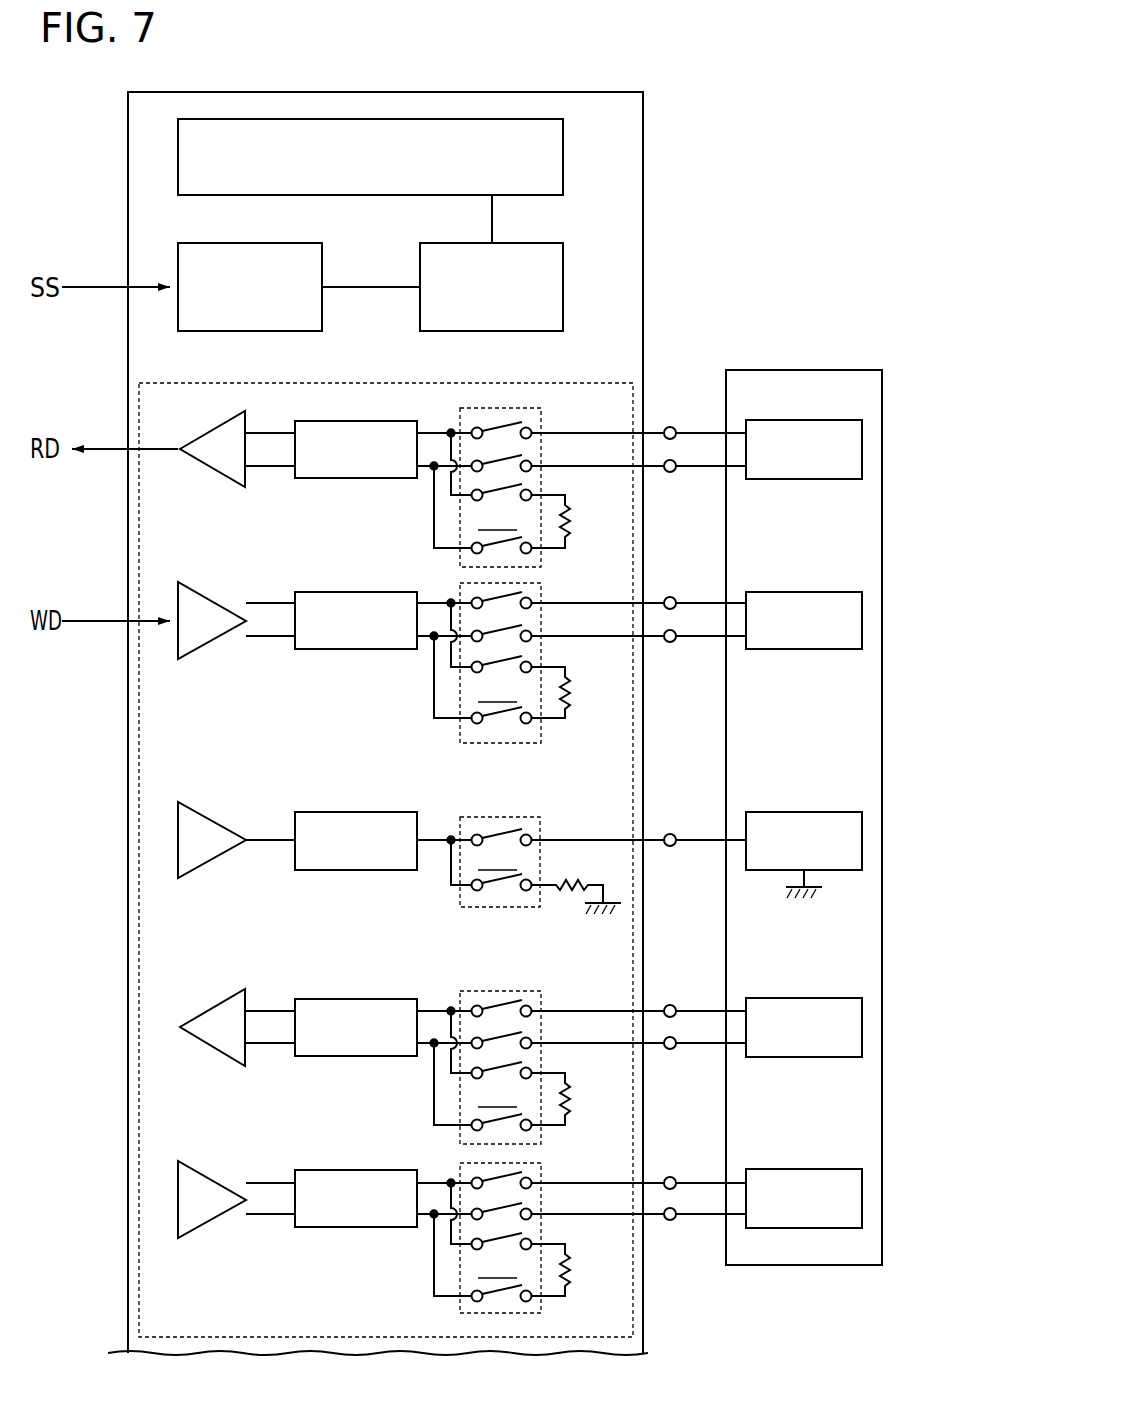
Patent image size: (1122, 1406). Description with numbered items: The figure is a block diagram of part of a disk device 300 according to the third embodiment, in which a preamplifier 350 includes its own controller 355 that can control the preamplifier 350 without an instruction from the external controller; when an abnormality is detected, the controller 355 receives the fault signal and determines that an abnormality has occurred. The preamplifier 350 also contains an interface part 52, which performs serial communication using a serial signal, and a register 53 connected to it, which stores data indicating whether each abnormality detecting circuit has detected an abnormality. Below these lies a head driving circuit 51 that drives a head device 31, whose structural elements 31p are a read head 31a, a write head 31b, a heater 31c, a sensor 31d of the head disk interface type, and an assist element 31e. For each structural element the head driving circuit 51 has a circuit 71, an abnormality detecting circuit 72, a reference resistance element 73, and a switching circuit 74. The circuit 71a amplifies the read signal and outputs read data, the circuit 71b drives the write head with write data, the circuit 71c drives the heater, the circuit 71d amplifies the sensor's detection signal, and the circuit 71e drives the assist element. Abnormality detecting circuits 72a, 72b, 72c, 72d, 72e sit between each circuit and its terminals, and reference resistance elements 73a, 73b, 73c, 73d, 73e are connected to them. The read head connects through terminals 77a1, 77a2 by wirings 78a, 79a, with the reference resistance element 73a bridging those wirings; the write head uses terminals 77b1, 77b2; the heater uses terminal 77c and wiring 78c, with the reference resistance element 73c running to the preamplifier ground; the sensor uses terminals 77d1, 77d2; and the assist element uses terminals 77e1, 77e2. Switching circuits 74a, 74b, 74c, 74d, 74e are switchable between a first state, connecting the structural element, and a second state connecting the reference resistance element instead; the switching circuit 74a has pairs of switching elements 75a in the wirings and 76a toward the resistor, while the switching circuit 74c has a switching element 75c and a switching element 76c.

The disk device 300 is at (836, 106).
The preamplifier 350 is at (590, 86).
The controller 355 is at (563, 157).
The interface part 52 is at (277, 243).
The register 53 is at (525, 243).
The head driving circuit 51 is at (556, 384).
The head device 31 is at (838, 364).
The read head 31a is at (800, 420).
The write head 31b is at (800, 592).
The heater 31c is at (800, 812).
The sensor 31d is at (800, 998).
The assist element 31e is at (800, 1169).
The structural element 31p is at (868, 430).
The circuit 71 is at (198, 844).
The circuit 71a is at (212, 422).
The circuit 71b is at (207, 650).
The circuit 71c is at (207, 868).
The circuit 71d is at (212, 1050).
The circuit 71e is at (207, 1228).
The abnormality detecting circuit 72 is at (344, 860).
The abnormality detecting circuit 72a is at (308, 482).
The abnormality detecting circuit 72b is at (308, 653).
The abnormality detecting circuit 72c is at (308, 874).
The abnormality detecting circuit 72d is at (308, 1060).
The abnormality detecting circuit 72e is at (308, 1231).
The reference resistance element 73 is at (580, 895).
The reference resistance element 73a is at (573, 536).
The reference resistance element 73b is at (573, 708).
The reference resistance element 73c is at (576, 876).
The reference resistance element 73d is at (577, 1087).
The reference resistance element 73e is at (577, 1258).
The switching circuit 74 is at (490, 853).
The switching circuit 74a is at (490, 494).
The switching circuit 74b is at (458, 730).
The switching circuit 74c is at (486, 853).
The switching circuit 74d is at (458, 1093).
The switching circuit 74e is at (458, 1265).
The switching element 75a is at (525, 425).
The switching element 75c is at (508, 828).
The switching element 76a is at (538, 487).
The switching element 76c is at (504, 894).
The terminal 77a1 is at (670, 427).
The terminal 77a2 is at (670, 472).
The terminal 77b1 is at (670, 597).
The terminal 77b2 is at (670, 642).
The terminal 77c is at (670, 834).
The terminal 77d1 is at (670, 1005).
The terminal 77d2 is at (670, 1049).
The terminal 77e1 is at (670, 1176).
The terminal 77e2 is at (670, 1220).
The wiring 78a is at (609, 432).
The wiring 78c is at (590, 839).
The wiring 79a is at (617, 465).